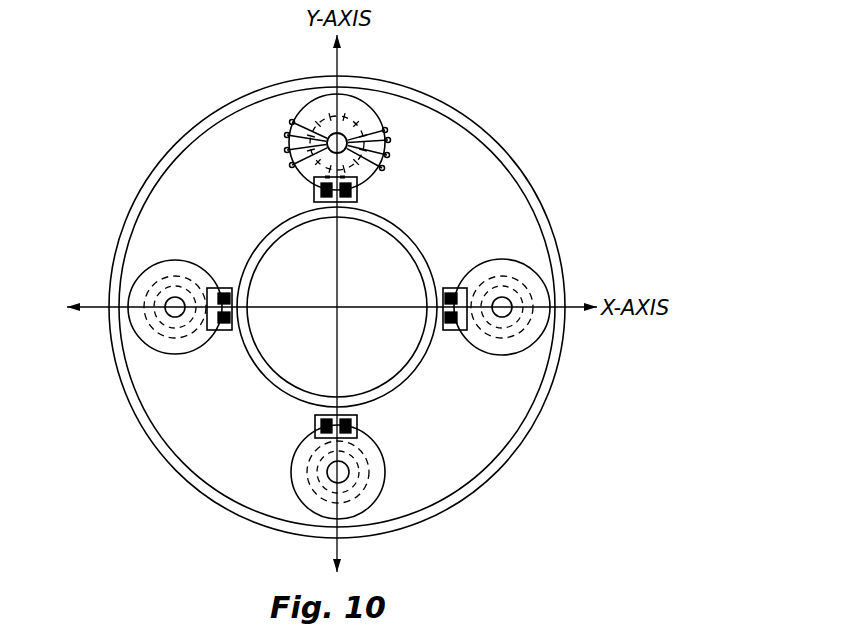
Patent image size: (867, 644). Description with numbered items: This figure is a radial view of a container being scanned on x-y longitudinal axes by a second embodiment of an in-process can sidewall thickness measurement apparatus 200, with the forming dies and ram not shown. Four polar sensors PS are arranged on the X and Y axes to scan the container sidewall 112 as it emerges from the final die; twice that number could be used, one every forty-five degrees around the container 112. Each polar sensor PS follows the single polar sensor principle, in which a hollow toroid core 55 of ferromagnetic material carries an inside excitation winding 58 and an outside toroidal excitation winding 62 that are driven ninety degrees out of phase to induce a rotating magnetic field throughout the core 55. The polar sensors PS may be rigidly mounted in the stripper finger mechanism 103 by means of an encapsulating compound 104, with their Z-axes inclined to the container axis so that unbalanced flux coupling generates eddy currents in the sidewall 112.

The in-process can sidewall thickness measurement apparatus 200 is at (479, 86).
The hollow toroid core 55 is at (377, 112).
The inside excitation winding 58 is at (390, 135).
The outside toroidal excitation winding 62 is at (382, 168).
The stripper finger mechanism 103 is at (532, 182).
The encapsulating compound 104 is at (458, 473).
The container sidewall 112 is at (275, 385).
The polar coordinates sensing element PS is at (313, 190).